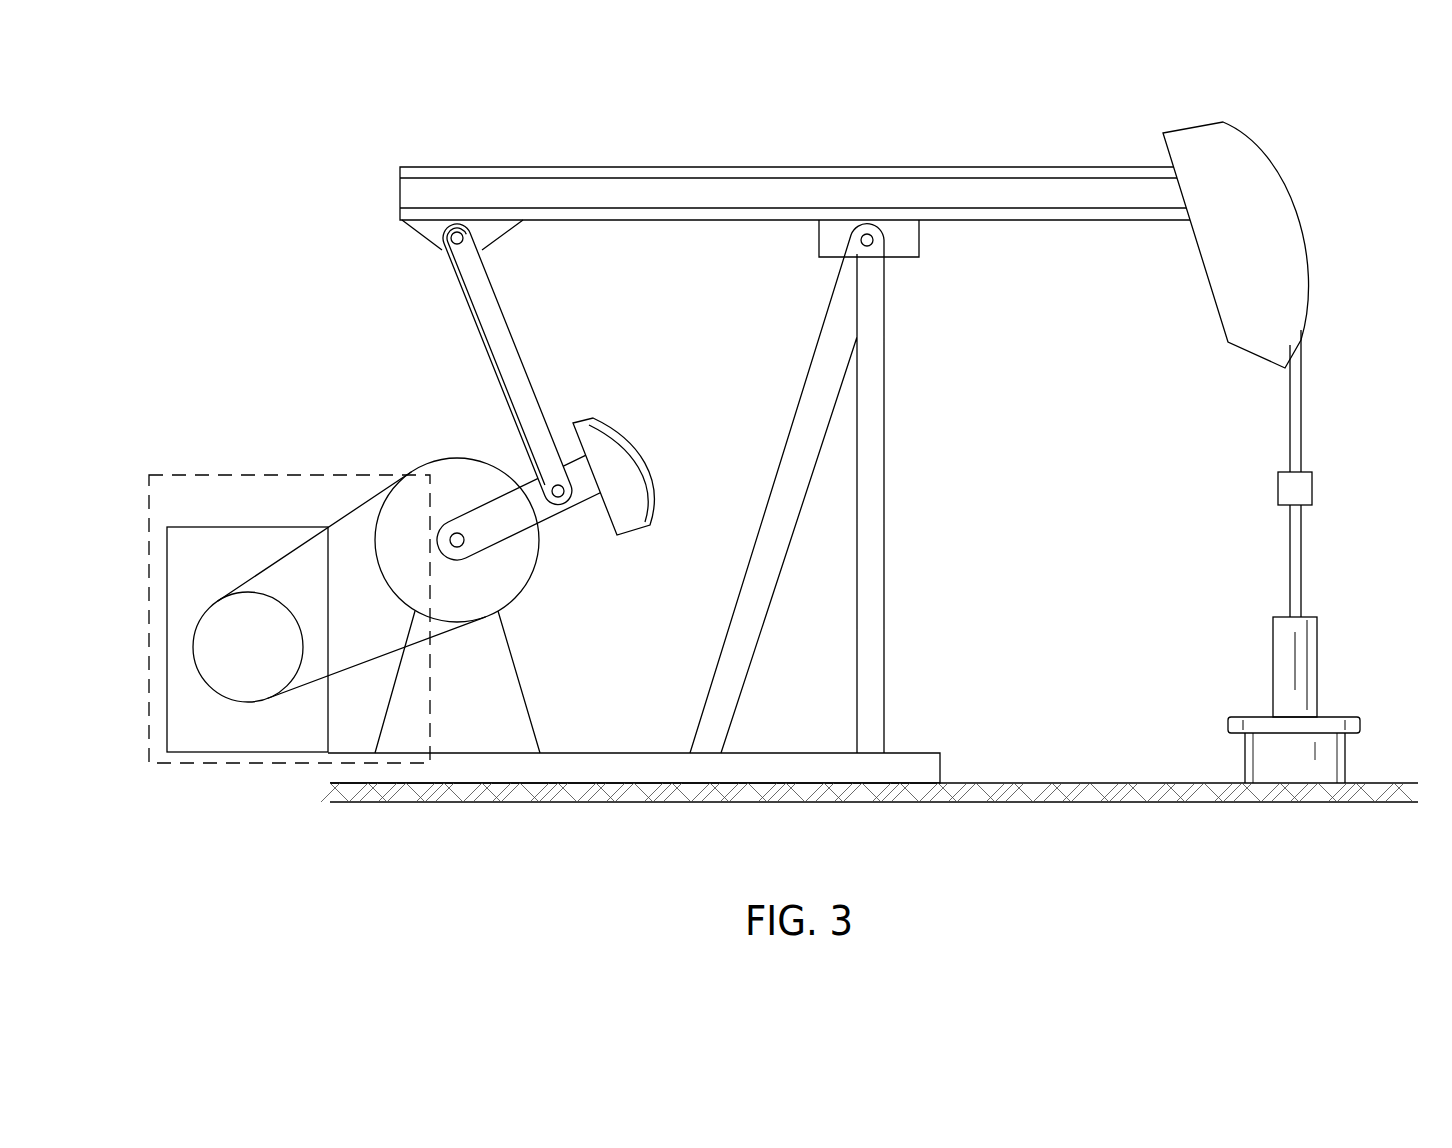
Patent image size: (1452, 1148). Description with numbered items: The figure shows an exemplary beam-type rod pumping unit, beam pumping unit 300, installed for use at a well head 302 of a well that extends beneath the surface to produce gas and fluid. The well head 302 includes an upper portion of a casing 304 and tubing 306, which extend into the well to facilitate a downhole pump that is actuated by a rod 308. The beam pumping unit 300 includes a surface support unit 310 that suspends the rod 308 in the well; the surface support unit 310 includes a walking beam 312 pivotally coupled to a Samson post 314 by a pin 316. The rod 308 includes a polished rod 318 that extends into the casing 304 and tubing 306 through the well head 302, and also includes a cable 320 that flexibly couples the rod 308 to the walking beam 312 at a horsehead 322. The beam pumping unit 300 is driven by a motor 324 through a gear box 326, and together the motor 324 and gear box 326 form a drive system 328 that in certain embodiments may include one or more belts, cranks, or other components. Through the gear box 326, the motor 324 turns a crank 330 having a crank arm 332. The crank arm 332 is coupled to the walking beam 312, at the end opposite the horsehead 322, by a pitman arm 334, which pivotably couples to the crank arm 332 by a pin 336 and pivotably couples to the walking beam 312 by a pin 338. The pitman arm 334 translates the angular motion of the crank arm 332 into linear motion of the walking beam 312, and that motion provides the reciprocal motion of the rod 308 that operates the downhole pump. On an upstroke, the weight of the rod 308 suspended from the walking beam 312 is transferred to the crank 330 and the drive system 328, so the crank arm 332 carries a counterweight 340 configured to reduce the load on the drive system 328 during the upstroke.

The beam pumping unit 300 is at (323, 120).
The well head 302 is at (1193, 736).
The casing 304 is at (1345, 757).
The tubing 306 is at (1318, 662).
The rod 308 is at (1260, 488).
The surface support unit 310 is at (905, 277).
The walking beam 312 is at (898, 167).
The Samson post 314 is at (886, 498).
The pin 316 is at (851, 262).
The polished rod 318 is at (1302, 557).
The cable 320 is at (1302, 412).
The horsehead 322 is at (1286, 185).
The motor 324 is at (228, 702).
The gear box 326 is at (200, 527).
The drive system 328 is at (288, 475).
The crank 330 is at (448, 458).
The crank arm 332 is at (547, 532).
The pitman arm 334 is at (531, 357).
The pin 336 is at (571, 510).
The pin 338 is at (451, 246).
The counterweight 340 is at (601, 420).